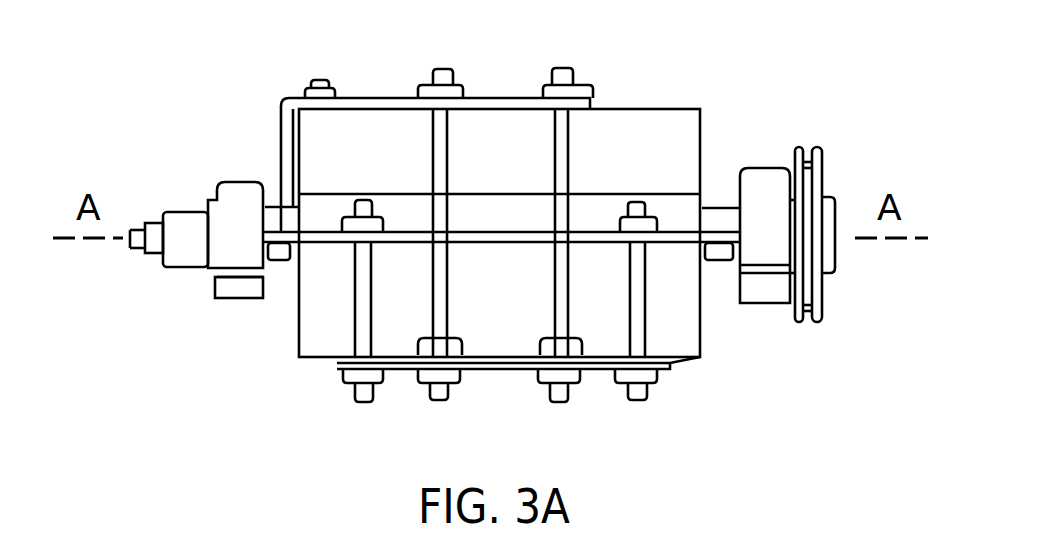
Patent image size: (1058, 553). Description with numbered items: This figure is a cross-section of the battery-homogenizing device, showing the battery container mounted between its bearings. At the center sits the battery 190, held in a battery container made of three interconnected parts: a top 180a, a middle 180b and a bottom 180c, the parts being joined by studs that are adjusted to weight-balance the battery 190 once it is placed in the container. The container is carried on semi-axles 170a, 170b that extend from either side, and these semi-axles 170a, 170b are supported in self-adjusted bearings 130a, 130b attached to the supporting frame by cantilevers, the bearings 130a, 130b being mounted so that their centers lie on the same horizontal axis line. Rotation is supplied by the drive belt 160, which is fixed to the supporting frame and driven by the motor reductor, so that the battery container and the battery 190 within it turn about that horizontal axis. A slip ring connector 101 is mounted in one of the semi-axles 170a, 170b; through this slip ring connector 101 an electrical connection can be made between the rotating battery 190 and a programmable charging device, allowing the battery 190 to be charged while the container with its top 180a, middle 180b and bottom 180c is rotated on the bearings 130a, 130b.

The slip ring connector 101 is at (168, 252).
The self-adjusted bearing 130a is at (766, 205).
The self-adjusted bearing 130b is at (238, 205).
The drive belt 160 is at (275, 152).
The semi-axle 170a is at (804, 226).
The semi-axle 170b is at (203, 230).
The top of battery container 180a is at (505, 95).
The middle of battery container 180b is at (678, 236).
The bottom of battery container 180c is at (500, 368).
The battery 190 is at (638, 153).